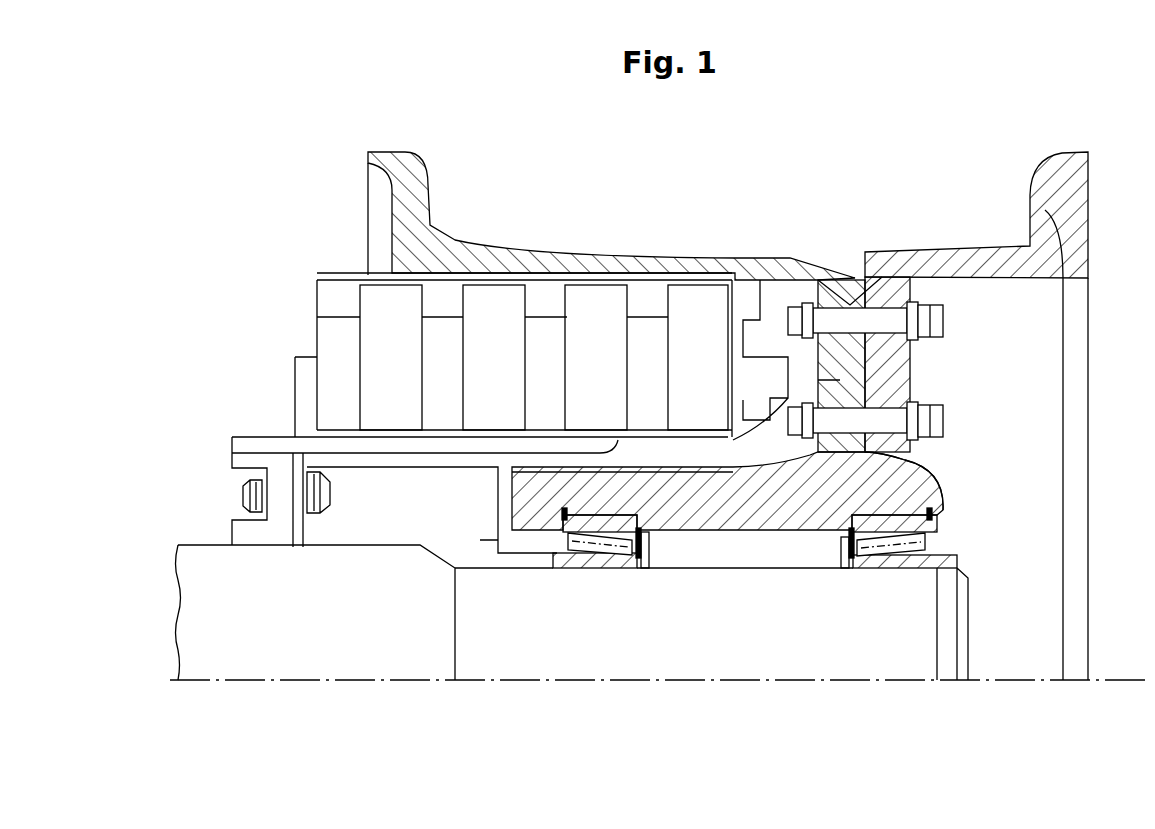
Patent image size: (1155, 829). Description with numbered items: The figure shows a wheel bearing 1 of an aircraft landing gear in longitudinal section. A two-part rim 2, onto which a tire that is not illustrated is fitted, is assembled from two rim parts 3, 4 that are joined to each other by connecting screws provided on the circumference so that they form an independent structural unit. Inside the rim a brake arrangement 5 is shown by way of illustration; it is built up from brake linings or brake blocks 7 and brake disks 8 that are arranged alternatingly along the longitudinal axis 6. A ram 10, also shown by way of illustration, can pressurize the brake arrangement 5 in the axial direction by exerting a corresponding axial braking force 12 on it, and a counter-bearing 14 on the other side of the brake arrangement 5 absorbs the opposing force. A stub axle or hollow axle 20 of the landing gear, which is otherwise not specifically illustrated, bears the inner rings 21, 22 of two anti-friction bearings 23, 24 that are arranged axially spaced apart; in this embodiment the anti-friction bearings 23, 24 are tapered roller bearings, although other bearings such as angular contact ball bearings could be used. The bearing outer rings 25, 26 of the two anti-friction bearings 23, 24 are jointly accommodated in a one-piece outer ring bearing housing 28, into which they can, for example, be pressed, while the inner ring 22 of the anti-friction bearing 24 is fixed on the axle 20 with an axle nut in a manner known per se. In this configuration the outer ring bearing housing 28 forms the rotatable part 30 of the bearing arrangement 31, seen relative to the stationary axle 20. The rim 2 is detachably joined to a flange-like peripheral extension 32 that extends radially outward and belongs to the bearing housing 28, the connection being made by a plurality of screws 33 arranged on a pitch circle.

The wheel bearing 1 is at (298, 228).
The two-part rim 2 is at (843, 183).
The rim part 3 is at (580, 300).
The rim part 4 is at (978, 262).
The brake arrangement 5 is at (290, 314).
The longitudinal axis 6 is at (216, 685).
The brake linings or brake blocks 7 is at (331, 330).
The brake disks 8 is at (372, 330).
The ram 10 is at (294, 365).
The axial braking force 12 is at (282, 398).
The counter-bearing 14 is at (738, 330).
The hollow axle 20 is at (340, 660).
The inner ring 21 is at (565, 570).
The inner ring 22 is at (915, 570).
The anti-friction bearing 23 is at (660, 553).
The anti-friction bearing 24 is at (831, 550).
The bearing outer ring 25 is at (645, 540).
The bearing outer ring 26 is at (848, 550).
The outer ring bearing housing 28 is at (897, 485).
The rotatable part 30 is at (913, 502).
The bearing arrangement 31 is at (985, 432).
The flange-like peripheral extension 32 is at (850, 397).
The screws 33 is at (937, 418).